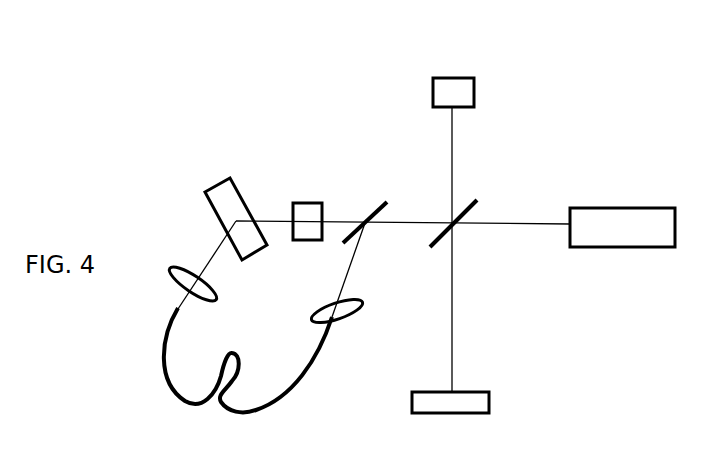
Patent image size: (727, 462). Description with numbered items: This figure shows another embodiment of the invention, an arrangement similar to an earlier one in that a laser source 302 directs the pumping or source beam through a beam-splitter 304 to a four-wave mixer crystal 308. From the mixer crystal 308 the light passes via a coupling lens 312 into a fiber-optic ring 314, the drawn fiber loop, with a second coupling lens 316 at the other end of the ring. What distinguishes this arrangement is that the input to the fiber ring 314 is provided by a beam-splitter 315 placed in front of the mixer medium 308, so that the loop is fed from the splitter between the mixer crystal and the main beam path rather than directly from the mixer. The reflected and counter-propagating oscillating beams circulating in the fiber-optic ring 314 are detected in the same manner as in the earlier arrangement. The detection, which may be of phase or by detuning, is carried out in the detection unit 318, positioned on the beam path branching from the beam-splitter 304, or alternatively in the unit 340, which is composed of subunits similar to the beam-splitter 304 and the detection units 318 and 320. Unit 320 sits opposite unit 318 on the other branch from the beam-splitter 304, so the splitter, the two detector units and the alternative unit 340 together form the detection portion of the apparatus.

The laser source 302 is at (630, 207).
The beam-splitter 304 is at (468, 210).
The four-wave mixer crystal 308 is at (222, 180).
The coupling lens 312 is at (177, 267).
The fiber-optic ring 314 is at (232, 350).
The beam-splitter 315 is at (380, 203).
The lens 316 is at (362, 310).
The detection unit 318 is at (455, 77).
The subunit 320 is at (477, 391).
The detection unit 340 is at (312, 241).